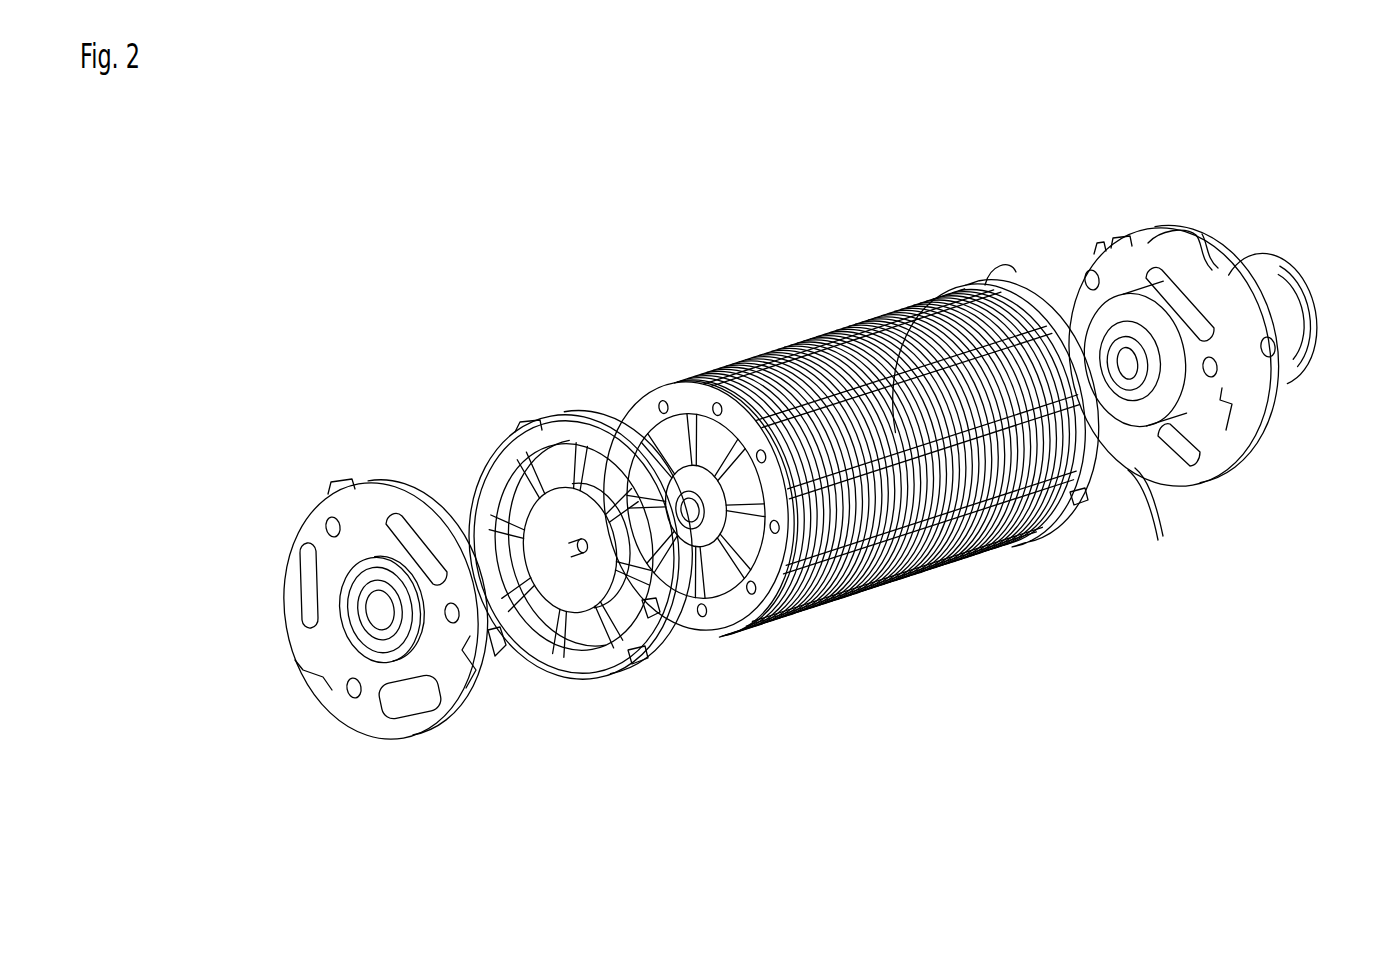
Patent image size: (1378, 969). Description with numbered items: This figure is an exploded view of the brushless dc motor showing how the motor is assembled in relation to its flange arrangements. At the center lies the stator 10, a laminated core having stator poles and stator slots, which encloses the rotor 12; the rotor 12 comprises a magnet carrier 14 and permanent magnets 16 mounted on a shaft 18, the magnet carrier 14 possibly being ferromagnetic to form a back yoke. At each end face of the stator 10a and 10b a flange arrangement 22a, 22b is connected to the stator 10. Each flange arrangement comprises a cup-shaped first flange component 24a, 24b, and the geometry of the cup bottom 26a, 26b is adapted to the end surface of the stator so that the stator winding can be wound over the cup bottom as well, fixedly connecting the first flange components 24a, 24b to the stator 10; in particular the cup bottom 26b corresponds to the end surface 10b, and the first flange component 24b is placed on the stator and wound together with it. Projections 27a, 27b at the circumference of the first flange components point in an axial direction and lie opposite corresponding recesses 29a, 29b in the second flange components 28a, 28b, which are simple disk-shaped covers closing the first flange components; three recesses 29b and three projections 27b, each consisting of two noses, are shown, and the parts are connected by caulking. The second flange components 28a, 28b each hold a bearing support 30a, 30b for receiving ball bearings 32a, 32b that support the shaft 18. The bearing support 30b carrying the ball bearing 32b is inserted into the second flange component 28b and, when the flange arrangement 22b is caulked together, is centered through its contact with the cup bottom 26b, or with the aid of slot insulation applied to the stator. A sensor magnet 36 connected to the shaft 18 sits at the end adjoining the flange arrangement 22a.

The stator 10 is at (773, 335).
The end face of the stator 10a is at (1052, 524).
The end surface of the stator 10b is at (728, 616).
The rotor 12 is at (688, 400).
The magnet carrier 14 is at (822, 600).
The permanent magnets 16 is at (770, 598).
The shaft 18 is at (632, 398).
The flange arrangement 22a is at (1081, 496).
The flange arrangement 22b is at (637, 664).
The first flange component 24a is at (1040, 292).
The first flange component 24b is at (482, 458).
The cup bottom 26a is at (968, 292).
The cup bottom 26b is at (562, 447).
The projections 27a is at (998, 277).
The projections 27b is at (528, 426).
The second flange component 28a is at (1138, 256).
The second flange component 28b is at (307, 523).
The recesses 29a is at (1118, 244).
The recesses 29b is at (352, 487).
The bearing support 30a is at (1177, 398).
The bearing support 30b is at (353, 596).
The ball bearing 32a is at (1180, 468).
The ball bearing 32b is at (372, 622).
The sensor magnet 36 is at (1270, 258).